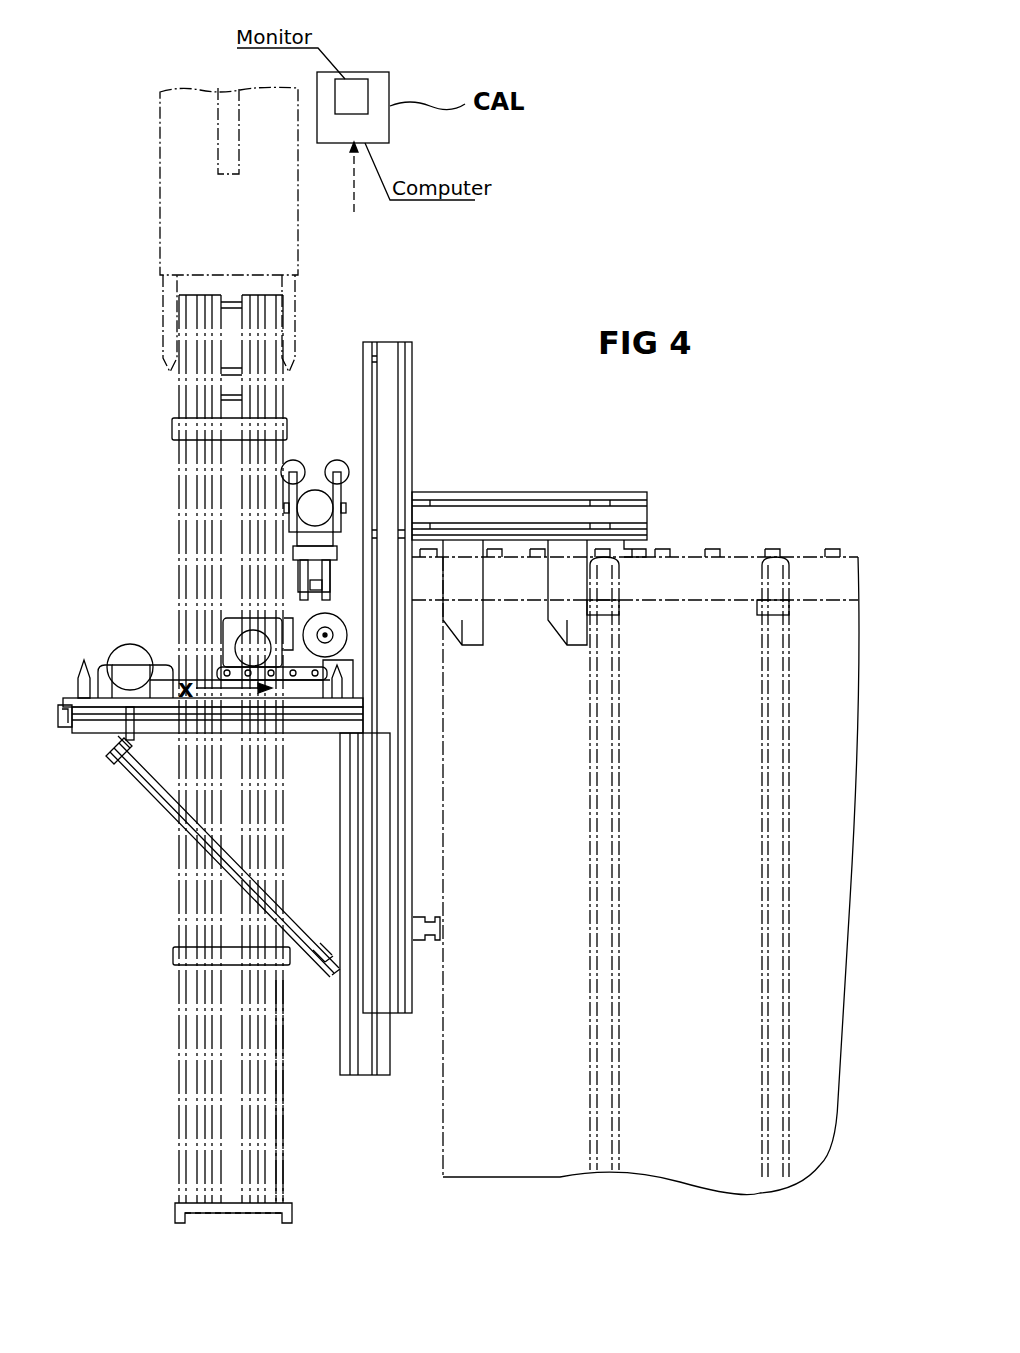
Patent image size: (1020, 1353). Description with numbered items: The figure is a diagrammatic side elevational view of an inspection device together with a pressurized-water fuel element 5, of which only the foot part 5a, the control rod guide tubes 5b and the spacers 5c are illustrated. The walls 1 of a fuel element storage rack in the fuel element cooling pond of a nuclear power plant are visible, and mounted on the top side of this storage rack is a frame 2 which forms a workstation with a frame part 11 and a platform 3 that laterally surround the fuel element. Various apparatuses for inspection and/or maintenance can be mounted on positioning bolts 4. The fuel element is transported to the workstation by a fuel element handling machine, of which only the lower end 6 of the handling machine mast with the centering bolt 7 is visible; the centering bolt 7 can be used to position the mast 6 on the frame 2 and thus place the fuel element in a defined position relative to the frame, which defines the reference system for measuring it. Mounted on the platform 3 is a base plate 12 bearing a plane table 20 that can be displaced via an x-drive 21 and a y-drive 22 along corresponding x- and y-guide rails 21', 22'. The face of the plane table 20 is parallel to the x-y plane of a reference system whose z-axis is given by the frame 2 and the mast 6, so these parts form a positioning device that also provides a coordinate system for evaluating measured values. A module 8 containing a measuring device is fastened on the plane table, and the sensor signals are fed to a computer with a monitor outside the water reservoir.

The walls 1 is at (590, 1082).
The frame 2 is at (412, 492).
The platform 3 is at (100, 733).
The positioning bolts 4 is at (84, 662).
The fuel element 5 is at (168, 450).
The foot part 5a is at (175, 1205).
The control rod guide tubes 5b is at (285, 1108).
The spacers 5c is at (173, 952).
The lower end of the fuel handling machine mast 6 is at (298, 262).
The centering bolt 7 is at (295, 338).
The module 8 is at (312, 452).
The frame part 11 is at (160, 812).
The base plate 12 is at (62, 727).
The plane table 20 is at (334, 645).
The x-drive 21 is at (113, 627).
The x-guide rail 21' is at (214, 636).
The y-drive 22 is at (217, 614).
The y-guide rail 22' is at (275, 724).